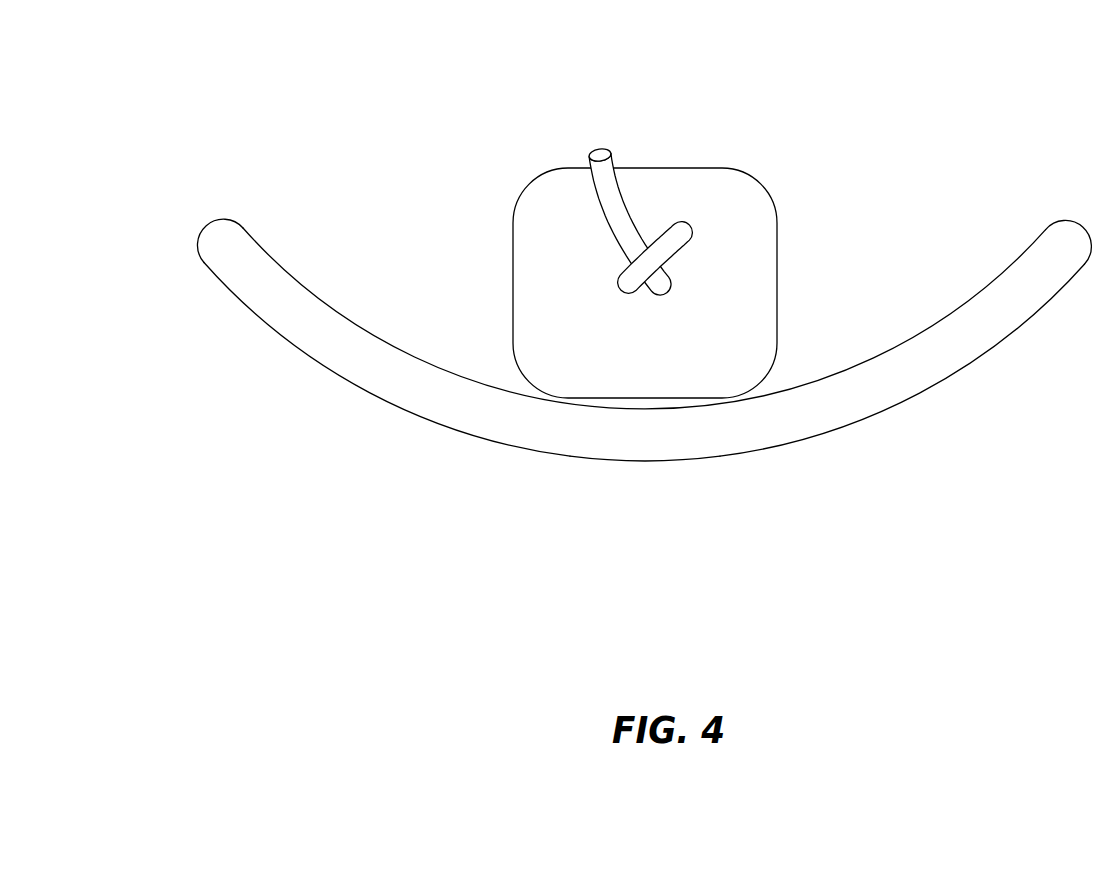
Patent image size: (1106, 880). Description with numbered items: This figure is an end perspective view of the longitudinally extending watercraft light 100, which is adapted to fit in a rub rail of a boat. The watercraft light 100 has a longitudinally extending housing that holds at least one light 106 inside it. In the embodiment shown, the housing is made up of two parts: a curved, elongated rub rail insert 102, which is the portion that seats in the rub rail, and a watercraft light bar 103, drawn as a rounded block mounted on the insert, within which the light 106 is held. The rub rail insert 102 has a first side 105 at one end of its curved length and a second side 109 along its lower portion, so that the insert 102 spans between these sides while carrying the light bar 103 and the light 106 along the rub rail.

The watercraft light 100 is at (651, 334).
The rub rail insert 102 is at (644, 354).
The watercraft light bar 103 is at (709, 210).
The first side 105 is at (287, 267).
The light 106 is at (712, 337).
The second side 109 is at (675, 459).